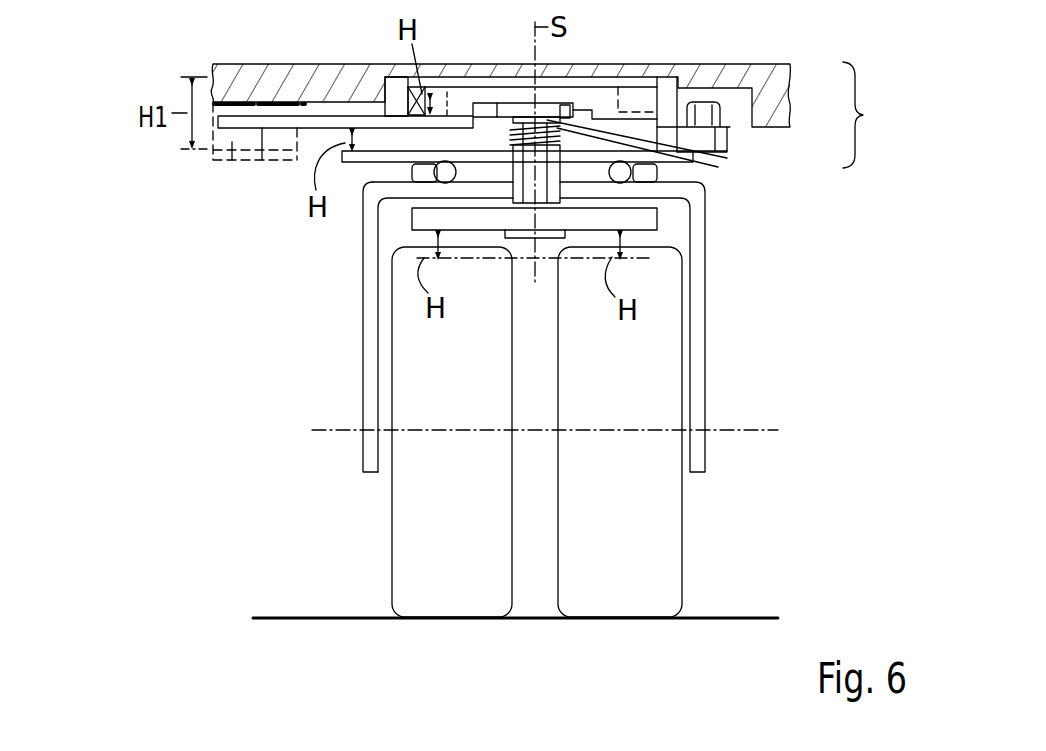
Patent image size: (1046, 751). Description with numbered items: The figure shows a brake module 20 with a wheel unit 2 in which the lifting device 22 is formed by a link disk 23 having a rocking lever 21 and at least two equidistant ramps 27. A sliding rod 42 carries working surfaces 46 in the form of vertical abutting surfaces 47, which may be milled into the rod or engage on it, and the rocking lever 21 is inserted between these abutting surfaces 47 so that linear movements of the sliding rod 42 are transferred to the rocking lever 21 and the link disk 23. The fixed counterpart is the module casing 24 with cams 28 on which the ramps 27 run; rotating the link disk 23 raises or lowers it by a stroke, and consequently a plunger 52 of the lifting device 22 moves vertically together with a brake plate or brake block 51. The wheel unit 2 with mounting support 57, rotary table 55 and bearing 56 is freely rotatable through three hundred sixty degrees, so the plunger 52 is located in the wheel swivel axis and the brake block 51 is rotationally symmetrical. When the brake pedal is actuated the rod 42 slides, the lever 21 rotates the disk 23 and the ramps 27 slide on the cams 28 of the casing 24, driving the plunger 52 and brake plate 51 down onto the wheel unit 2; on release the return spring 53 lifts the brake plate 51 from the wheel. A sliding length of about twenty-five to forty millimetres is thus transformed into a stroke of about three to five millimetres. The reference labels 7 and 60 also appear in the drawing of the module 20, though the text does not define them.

The wheel unit 2 is at (390, 545).
The housing plate 7 is at (772, 72).
The brake module 20 is at (914, 138).
The rocking lever 21 is at (325, 127).
The lifting device 22 is at (597, 100).
The link disk 23 is at (490, 100).
The module casing 24 is at (670, 80).
The ramps 27 is at (408, 90).
The cams 28 is at (633, 100).
The sliding rod 42 is at (212, 152).
The working surfaces 46 is at (232, 142).
The abutting surfaces 47 is at (262, 140).
The brake plate 51 is at (647, 218).
The plunger 52 is at (717, 136).
The return spring 53 is at (670, 146).
The rotary table 55 is at (690, 191).
The bearing 56 is at (440, 174).
The mounting support 57 is at (370, 329).
The holder assembly 60 is at (845, 279).